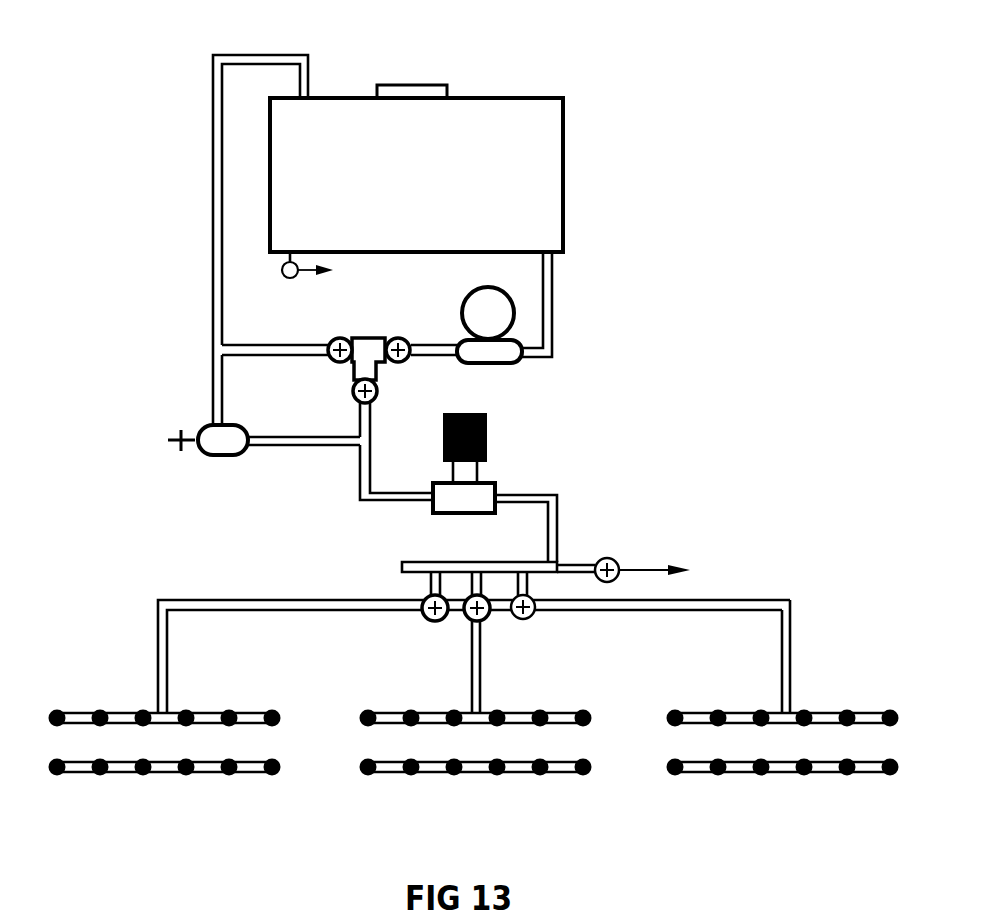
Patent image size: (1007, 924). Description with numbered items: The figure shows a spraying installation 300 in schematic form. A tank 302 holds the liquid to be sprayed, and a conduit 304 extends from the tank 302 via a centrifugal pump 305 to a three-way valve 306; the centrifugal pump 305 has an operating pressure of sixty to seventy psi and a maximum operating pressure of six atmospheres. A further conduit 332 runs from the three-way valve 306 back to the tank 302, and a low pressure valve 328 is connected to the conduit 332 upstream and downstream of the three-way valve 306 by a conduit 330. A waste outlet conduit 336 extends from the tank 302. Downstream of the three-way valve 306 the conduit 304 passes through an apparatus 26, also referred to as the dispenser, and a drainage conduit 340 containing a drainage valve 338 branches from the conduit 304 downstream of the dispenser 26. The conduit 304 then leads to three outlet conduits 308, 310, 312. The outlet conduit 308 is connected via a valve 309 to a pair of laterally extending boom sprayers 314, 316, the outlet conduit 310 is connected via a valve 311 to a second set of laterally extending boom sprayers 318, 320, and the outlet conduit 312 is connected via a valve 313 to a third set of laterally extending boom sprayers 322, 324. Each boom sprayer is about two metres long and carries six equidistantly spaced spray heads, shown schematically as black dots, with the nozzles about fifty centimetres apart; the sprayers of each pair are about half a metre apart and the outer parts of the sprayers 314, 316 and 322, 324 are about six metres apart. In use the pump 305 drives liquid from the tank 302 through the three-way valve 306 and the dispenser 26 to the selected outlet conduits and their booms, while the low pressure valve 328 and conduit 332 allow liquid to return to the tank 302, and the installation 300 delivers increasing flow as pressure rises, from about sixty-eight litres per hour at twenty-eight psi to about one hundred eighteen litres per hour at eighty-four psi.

The installation 300 is at (682, 102).
The tank 302 is at (503, 147).
The waste outlet conduit 336 is at (288, 265).
The further conduit 332 is at (240, 345).
The conduit 330 is at (213, 367).
The low pressure valve 328 is at (222, 445).
The three-way valve 306 is at (367, 352).
The centrifugal pump 305 is at (488, 313).
The conduit 304 is at (545, 315).
The apparatus 26 is at (478, 500).
The drainage conduit 340 is at (578, 567).
The drainage valve 338 is at (610, 559).
The outlet conduit 308 is at (255, 602).
The outlet conduit 312 is at (740, 605).
The valve 309 is at (422, 598).
The outlet conduit 310 is at (472, 632).
The valve 311 is at (485, 613).
The valve 313 is at (528, 618).
The boom sprayer 314 is at (80, 715).
The boom sprayer 316 is at (80, 769).
The boom sprayer 318 is at (382, 714).
The boom sprayer 320 is at (383, 770).
The boom sprayer 322 is at (862, 716).
The boom sprayer 324 is at (867, 770).